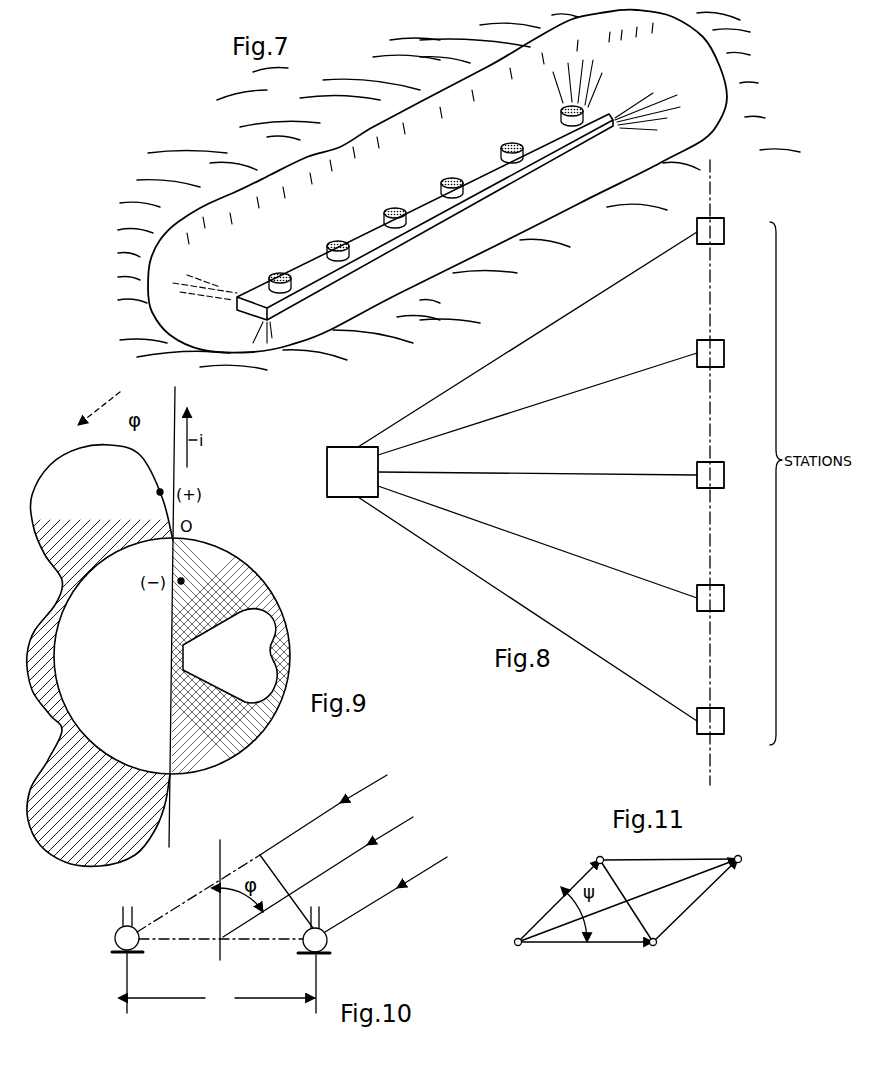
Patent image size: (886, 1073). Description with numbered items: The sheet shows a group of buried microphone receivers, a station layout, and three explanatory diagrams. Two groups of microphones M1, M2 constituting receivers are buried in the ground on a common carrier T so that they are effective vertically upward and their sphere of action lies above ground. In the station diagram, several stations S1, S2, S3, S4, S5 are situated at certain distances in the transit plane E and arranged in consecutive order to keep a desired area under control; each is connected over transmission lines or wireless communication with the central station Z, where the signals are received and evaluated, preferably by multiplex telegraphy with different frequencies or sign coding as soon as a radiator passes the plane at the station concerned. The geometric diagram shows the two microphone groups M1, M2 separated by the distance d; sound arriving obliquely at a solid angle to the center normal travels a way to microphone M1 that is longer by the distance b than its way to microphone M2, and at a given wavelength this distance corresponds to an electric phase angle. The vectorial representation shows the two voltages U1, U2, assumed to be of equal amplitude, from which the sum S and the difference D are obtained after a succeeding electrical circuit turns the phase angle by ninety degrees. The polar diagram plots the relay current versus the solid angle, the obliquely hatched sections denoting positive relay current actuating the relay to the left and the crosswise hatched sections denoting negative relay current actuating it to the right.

In FIG. 7, the microphone group M1 is at (279, 275).
In FIG. 10, the microphone group M1 is at (115, 937).
In FIG. 7, the microphone group M2 is at (338, 243).
In FIG. 10, the microphone group M2 is at (328, 940).
In FIG. 7, the carrier beam T is at (500, 168).
In FIG. 8, the central station Z is at (345, 469).
In FIG. 8, the receiving line E is at (722, 773).
In FIG. 8, the station S1 is at (724, 232).
In FIG. 8, the station S2 is at (724, 354).
In FIG. 8, the station S3 is at (724, 476).
In FIG. 8, the station S4 is at (724, 599).
In FIG. 8, the station S5 is at (724, 722).
In FIG. 10, the path-length difference b is at (262, 853).
In FIG. 10, the microphone spacing d is at (221, 999).
In FIG. 11, the microphone voltage U1 is at (559, 901).
In FIG. 11, the microphone voltage U2 is at (585, 961).
In FIG. 11, the sum voltage S is at (663, 887).
In FIG. 11, the difference voltage D is at (637, 907).